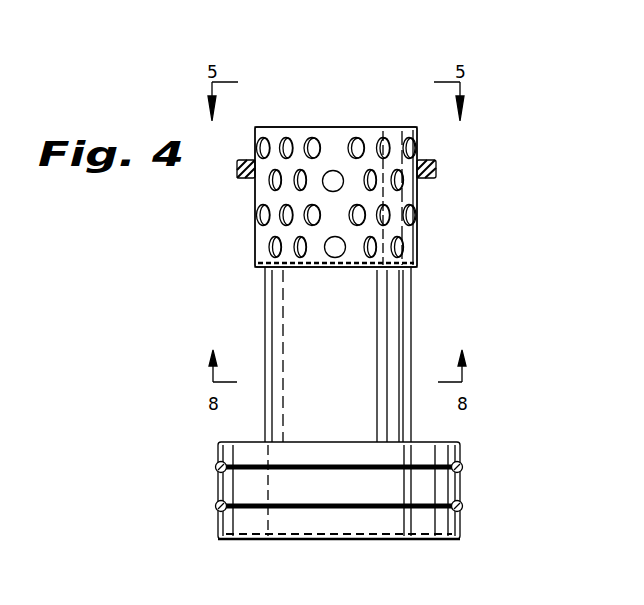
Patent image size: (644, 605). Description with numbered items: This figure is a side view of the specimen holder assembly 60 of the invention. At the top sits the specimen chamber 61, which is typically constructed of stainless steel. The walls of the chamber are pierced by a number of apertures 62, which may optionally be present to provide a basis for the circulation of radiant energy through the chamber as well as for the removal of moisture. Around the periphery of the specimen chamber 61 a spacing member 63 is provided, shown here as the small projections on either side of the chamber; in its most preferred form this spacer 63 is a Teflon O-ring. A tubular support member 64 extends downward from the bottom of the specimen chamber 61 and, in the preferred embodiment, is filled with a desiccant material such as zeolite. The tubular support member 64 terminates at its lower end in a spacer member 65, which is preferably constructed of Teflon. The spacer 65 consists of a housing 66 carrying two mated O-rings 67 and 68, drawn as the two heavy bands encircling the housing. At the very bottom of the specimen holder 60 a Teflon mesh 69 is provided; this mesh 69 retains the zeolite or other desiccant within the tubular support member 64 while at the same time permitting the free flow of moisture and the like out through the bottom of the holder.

The specimen holder assembly 60 is at (218, 316).
The specimen chamber 61 is at (408, 193).
The apertures 62 is at (400, 246).
The spacing member 63 is at (442, 161).
The tubular support member 64 is at (390, 312).
The spacer member 65 is at (469, 487).
The housing 66 is at (462, 533).
The O-ring 67 is at (215, 468).
The O-ring 68 is at (216, 507).
The mesh 69 is at (360, 540).